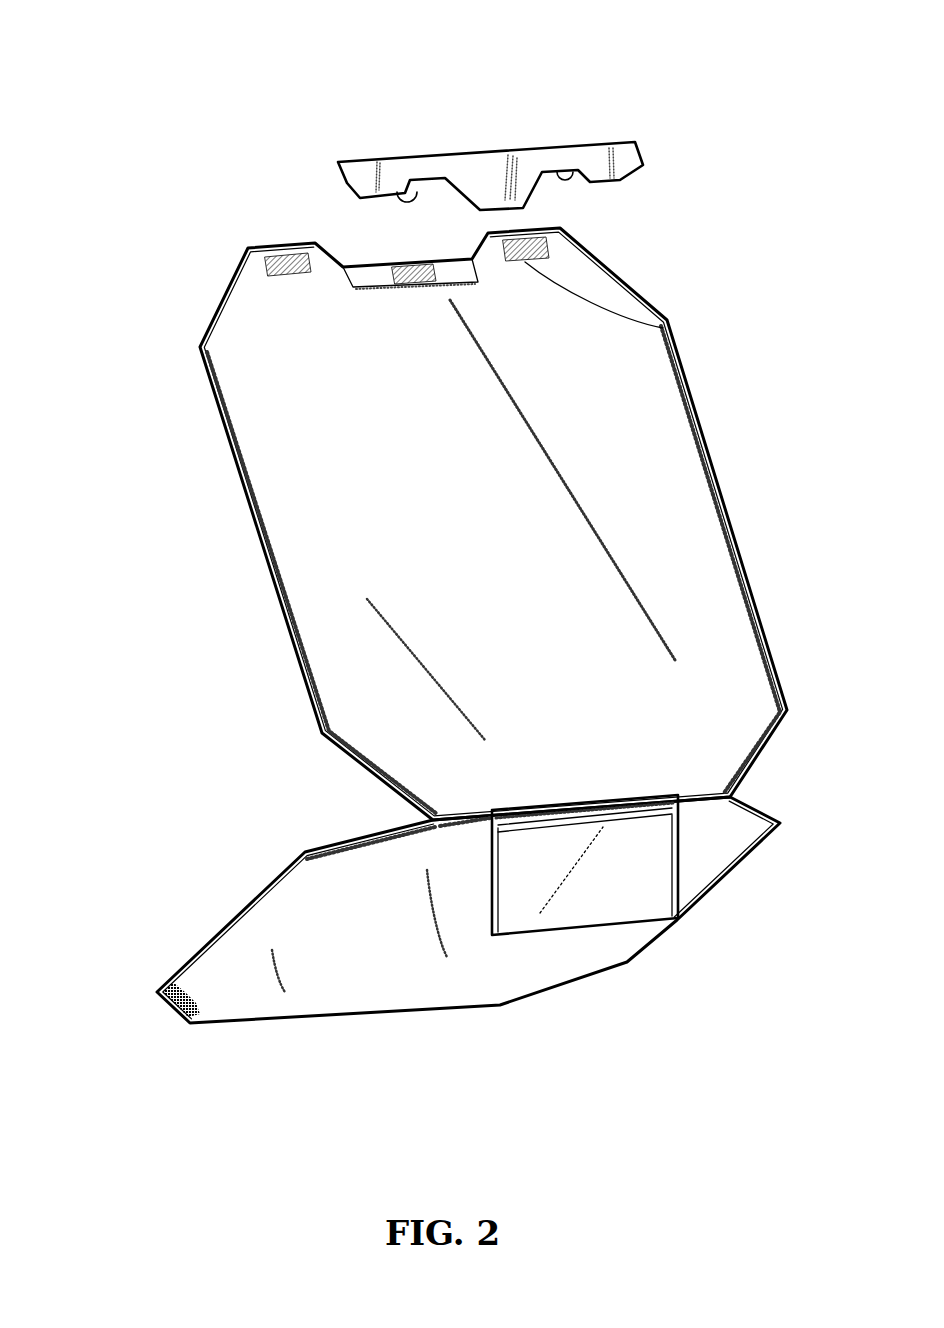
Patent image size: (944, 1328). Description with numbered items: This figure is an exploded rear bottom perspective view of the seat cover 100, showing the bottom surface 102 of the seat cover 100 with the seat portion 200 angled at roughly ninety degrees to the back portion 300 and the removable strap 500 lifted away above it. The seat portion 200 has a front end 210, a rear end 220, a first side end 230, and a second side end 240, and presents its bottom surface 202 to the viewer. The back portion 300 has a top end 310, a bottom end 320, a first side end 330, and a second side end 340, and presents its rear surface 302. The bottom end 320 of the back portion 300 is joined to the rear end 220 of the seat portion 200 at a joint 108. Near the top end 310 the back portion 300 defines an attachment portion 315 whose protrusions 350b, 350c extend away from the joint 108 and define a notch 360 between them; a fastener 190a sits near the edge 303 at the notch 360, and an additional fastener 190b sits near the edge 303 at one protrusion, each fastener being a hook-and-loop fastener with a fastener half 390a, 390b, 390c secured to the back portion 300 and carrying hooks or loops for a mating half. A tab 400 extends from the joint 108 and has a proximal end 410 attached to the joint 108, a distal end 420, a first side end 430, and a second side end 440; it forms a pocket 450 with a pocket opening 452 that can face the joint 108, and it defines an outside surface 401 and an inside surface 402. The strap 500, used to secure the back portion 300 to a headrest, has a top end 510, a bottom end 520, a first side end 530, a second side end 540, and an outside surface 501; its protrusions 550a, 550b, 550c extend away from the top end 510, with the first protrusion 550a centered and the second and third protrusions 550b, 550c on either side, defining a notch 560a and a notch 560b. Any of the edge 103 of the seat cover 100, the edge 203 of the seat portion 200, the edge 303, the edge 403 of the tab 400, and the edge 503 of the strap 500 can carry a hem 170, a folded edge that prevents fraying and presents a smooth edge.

The seat cover 100 is at (178, 115).
The bottom surface 102 is at (486, 523).
The edge 103 is at (486, 523).
The joint 108 is at (486, 523).
The hem 170 is at (360, 291).
The fastener 190a is at (487, 402).
The fastener 190b is at (174, 313).
The seat portion 200 is at (465, 955).
The bottom surface 202 is at (465, 955).
The edge 203 is at (465, 955).
The front end 210 is at (465, 955).
The rear end 220 is at (249, 247).
The first side end 230 is at (465, 955).
The second side end 240 is at (260, 923).
The back portion 300 is at (486, 523).
The rear surface 302 is at (486, 523).
The edge 303 is at (486, 523).
The top end 310 is at (434, 305).
The attachment portion 315 is at (486, 523).
The bottom end 320 is at (486, 523).
The first side end 330 is at (486, 523).
The second side end 340 is at (486, 523).
The protrusion 350b is at (174, 313).
The protrusion 350c is at (666, 287).
The notch 360 is at (487, 402).
The fastener half 390a is at (503, 262).
The fastener half 390b is at (302, 275).
The fastener half 390c is at (570, 233).
The tab 400 is at (655, 893).
The outside surface 401 is at (655, 893).
The inside surface 402 is at (655, 893).
The edge 403 is at (655, 893).
The proximal end 410 is at (655, 893).
The distal end 420 is at (655, 893).
The first side end 430 is at (655, 893).
The second side end 440 is at (655, 893).
The pocket 450 is at (655, 893).
The pocket opening 452 is at (520, 806).
The strap 500 is at (510, 128).
The outside surface 501 is at (510, 128).
The edge 503 is at (510, 128).
The top end 510 is at (510, 128).
The bottom end 520 is at (510, 128).
The first side end 530 is at (510, 128).
The second side end 540 is at (510, 128).
The first protrusion 550a is at (510, 128).
The second protrusion 550b is at (510, 128).
The third protrusion 550c is at (510, 128).
The notch 560a is at (510, 128).
The notch 560b is at (360, 158).